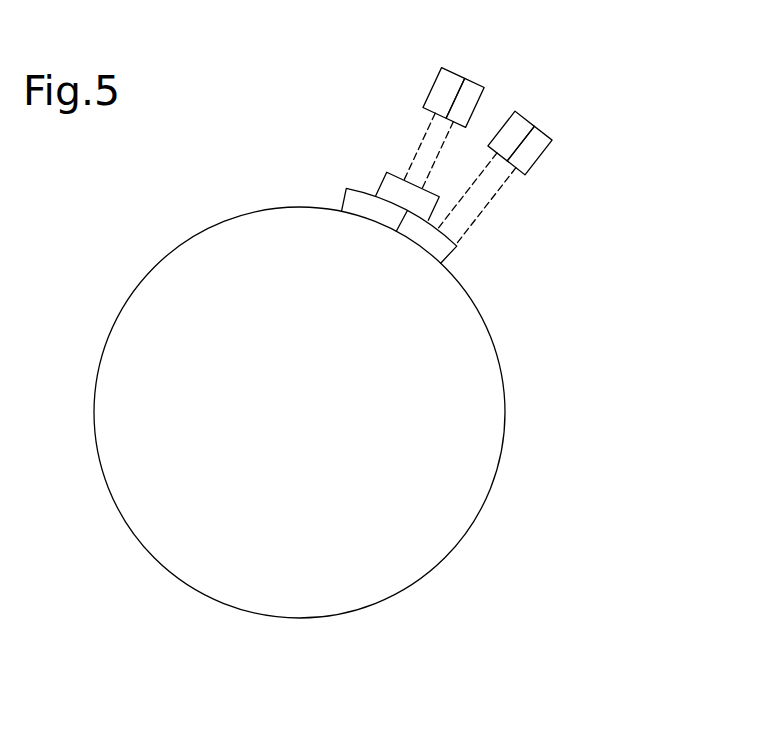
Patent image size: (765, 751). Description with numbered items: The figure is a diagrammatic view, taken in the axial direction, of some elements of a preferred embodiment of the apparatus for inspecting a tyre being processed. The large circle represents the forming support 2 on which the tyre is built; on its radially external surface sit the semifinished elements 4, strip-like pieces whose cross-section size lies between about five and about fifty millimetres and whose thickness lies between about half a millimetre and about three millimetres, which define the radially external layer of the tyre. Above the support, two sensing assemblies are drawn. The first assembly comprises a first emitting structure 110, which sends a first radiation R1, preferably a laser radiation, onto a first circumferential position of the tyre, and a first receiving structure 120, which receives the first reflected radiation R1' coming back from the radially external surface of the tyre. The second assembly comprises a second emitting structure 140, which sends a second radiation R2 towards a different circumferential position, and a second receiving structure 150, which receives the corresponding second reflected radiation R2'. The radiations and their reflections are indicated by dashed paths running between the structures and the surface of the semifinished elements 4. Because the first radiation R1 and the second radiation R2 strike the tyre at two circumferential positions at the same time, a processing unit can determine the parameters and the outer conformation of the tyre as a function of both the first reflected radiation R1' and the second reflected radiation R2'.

The forming support 2 is at (473, 433).
The semifinished elements 4 is at (372, 173).
The first emitting structure 110 is at (445, 90).
The first receiving structure 120 is at (465, 98).
The second emitting structure 140 is at (518, 124).
The second receiving structure 150 is at (538, 145).
The first radiation R1 is at (376, 120).
The first reflected radiation R1' is at (504, 116).
The second radiation R2 is at (534, 191).
The second reflected radiation R2' is at (531, 215).